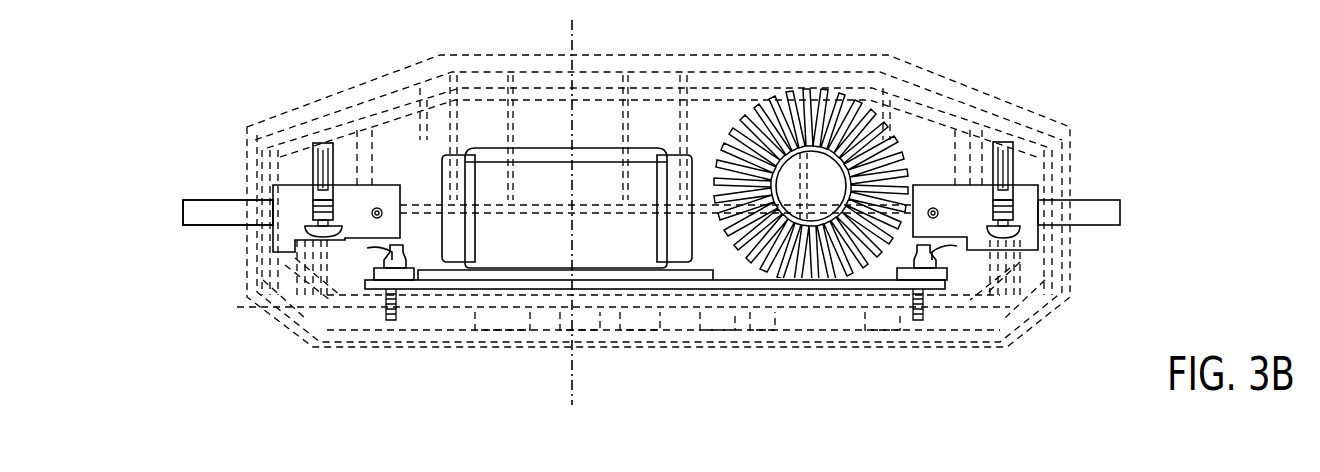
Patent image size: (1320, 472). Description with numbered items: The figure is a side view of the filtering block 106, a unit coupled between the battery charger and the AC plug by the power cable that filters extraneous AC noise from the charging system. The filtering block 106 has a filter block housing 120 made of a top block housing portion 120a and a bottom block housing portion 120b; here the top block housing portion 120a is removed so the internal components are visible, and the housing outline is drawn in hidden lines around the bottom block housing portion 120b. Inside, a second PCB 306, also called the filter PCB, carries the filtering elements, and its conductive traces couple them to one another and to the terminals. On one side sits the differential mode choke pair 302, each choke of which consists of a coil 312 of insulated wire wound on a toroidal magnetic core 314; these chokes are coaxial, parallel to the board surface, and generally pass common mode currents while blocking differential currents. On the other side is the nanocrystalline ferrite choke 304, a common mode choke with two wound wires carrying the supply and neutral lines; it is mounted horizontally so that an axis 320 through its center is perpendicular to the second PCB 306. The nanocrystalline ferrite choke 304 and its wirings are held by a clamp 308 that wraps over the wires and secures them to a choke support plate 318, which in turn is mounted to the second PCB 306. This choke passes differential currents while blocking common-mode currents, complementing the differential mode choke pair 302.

The filtering block 106 is at (1057, 341).
The filter block housing 120 is at (626, 264).
The top block housing portion 120a is at (330, 88).
The bottom block housing portion 120b is at (213, 312).
The differential mode choke pair 302 is at (811, 151).
The nanocrystalline ferrite choke 304 is at (513, 143).
The second PCB 306 is at (661, 324).
The clamp 308 is at (519, 148).
The coil 312 is at (840, 100).
The toroidal magnetic core 314 is at (815, 92).
The choke support plate 318 is at (452, 274).
The axis 320 is at (582, 362).